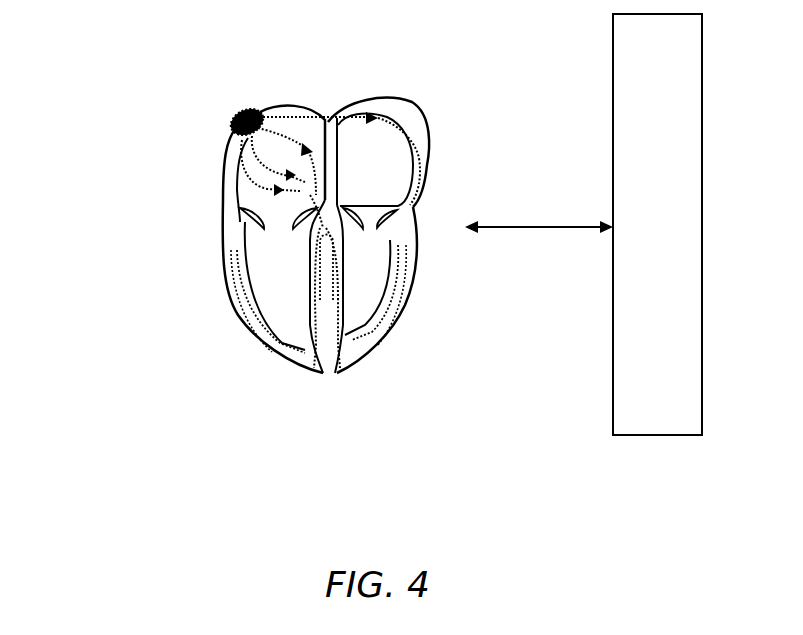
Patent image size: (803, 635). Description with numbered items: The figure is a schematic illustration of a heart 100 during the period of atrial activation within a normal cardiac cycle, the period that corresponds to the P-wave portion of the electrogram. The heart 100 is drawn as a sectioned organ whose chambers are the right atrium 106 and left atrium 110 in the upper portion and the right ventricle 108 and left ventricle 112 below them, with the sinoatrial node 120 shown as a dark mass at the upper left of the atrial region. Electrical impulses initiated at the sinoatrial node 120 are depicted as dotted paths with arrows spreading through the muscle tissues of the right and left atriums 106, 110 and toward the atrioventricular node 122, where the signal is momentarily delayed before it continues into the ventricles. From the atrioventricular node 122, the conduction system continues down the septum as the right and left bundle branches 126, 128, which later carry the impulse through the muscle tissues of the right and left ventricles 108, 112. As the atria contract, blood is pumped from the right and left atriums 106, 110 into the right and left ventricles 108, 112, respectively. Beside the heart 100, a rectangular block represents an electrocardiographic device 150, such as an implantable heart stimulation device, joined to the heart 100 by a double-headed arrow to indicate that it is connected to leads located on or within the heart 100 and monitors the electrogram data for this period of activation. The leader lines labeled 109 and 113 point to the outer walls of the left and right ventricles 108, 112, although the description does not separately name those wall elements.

The heart 100 is at (212, 90).
The sinoatrial node 120 is at (233, 128).
The right atrium 106 is at (243, 192).
The left atrium 110 is at (378, 157).
The atrioventricular node 122 is at (415, 150).
The right ventricle 108 is at (280, 268).
The left ventricular wall 109 is at (278, 308).
The left ventricle 112 is at (367, 270).
The right ventricular wall 113 is at (383, 320).
The right bundle branch 126 is at (322, 373).
The left bundle branch 128 is at (336, 373).
The electrocardiographic device 150 is at (659, 436).